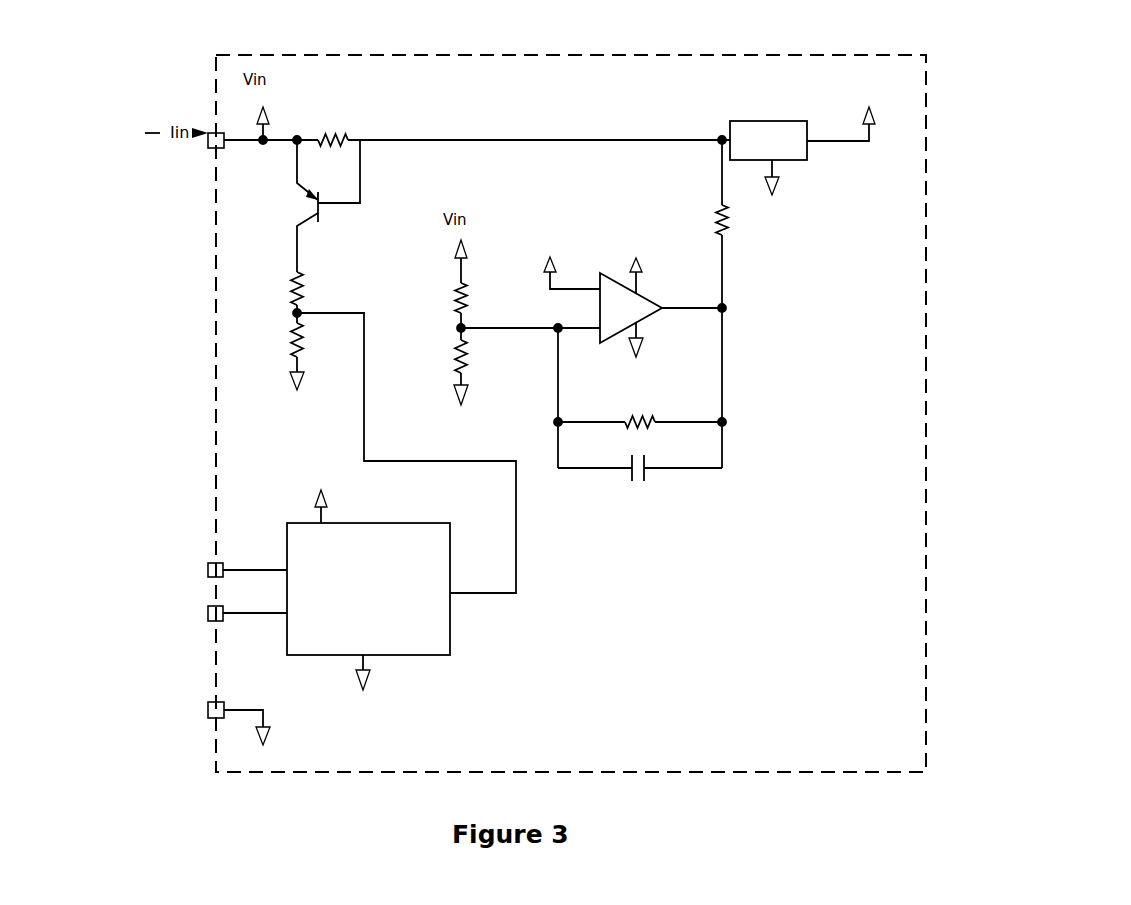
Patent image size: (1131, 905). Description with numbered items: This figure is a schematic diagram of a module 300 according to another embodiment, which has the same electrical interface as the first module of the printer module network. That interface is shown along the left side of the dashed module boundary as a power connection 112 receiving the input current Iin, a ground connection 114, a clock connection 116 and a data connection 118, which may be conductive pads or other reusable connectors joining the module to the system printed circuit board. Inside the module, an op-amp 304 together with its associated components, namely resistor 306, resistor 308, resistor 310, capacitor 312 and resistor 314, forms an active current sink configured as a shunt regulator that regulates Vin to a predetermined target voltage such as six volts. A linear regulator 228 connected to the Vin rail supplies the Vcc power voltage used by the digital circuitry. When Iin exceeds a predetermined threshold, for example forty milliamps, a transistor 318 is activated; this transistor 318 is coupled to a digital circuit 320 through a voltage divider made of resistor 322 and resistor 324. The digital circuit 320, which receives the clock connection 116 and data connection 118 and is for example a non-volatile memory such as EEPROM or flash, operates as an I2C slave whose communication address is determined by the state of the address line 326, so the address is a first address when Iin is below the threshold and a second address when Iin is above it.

The module 300 is at (1038, 94).
The power connection 112 is at (214, 131).
The ground connection 114 is at (208, 702).
The clock connection 116 is at (223, 563).
The data connection 118 is at (223, 620).
The linear regulator 228 is at (768, 121).
The op-amp 304 is at (652, 320).
The resistor 306 is at (340, 138).
The resistor 308 is at (466, 367).
The resistor 310 is at (633, 418).
The capacitor 312 is at (646, 478).
The resistor 314 is at (728, 230).
The transistor 318 is at (320, 220).
The digital circuit 320 is at (450, 623).
The resistor 322 is at (303, 278).
The resistor 324 is at (292, 345).
The address line 326 is at (516, 565).